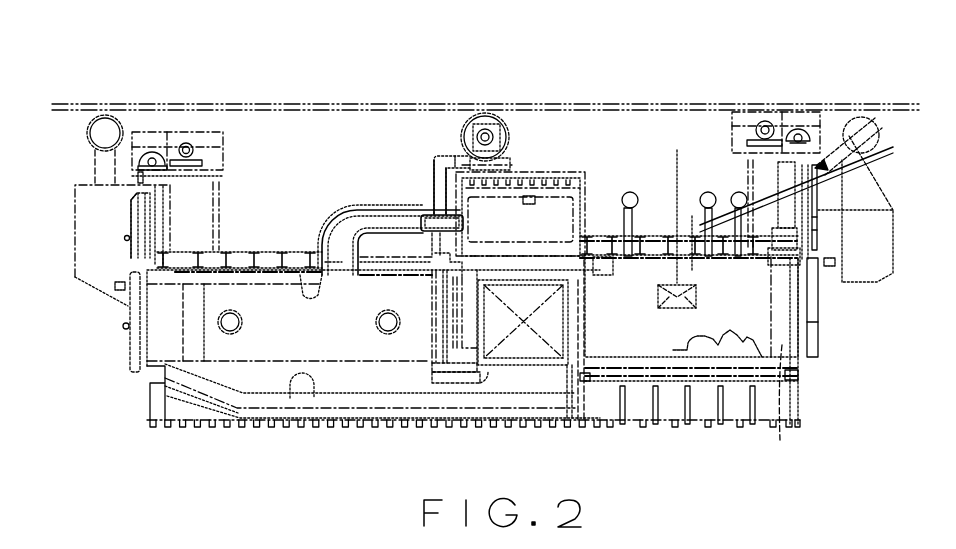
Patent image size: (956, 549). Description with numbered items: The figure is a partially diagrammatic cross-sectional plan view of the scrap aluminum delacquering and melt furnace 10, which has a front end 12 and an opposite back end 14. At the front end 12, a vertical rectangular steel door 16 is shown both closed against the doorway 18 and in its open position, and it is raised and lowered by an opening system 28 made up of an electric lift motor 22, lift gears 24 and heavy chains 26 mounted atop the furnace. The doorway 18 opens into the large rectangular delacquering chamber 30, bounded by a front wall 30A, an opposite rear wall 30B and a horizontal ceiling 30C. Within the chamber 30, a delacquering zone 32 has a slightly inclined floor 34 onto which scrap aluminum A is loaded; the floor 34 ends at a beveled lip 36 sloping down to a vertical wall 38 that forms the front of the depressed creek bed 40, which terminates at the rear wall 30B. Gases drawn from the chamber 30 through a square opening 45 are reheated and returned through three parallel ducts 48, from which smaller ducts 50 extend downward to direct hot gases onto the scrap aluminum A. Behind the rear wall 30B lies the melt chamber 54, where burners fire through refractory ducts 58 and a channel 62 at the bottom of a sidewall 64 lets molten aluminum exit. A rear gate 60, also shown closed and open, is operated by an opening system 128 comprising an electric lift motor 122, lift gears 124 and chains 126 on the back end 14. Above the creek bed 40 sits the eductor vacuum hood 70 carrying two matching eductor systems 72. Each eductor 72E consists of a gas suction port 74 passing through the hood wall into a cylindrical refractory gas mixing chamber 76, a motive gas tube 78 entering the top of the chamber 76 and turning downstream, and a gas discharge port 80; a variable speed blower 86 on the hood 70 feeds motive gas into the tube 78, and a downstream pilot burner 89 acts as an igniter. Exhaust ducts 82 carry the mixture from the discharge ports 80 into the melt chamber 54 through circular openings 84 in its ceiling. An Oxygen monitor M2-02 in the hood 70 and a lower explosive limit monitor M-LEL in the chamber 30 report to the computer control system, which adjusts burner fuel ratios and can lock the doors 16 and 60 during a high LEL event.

The scrap aluminum delacquering and melt furnace 10 is at (540, 58).
The front end 12 is at (715, 68).
The back end 14 is at (209, 82).
The door 16 is at (860, 213).
The doorway 18 is at (803, 363).
The electric lift motor 22 is at (767, 120).
The lift gears 24 is at (800, 130).
The chains 26 is at (862, 118).
The opening system 28 is at (809, 78).
The delacquering chamber 30 is at (642, 285).
The front wall 30A is at (787, 401).
The rear wall 30B is at (486, 384).
The ceiling 30C is at (690, 215).
The delacquering zone 32 is at (647, 303).
The floor 34 is at (660, 357).
The beveled lip 36 is at (580, 420).
The vertical wall 38 is at (565, 380).
The creek bed 40 is at (521, 380).
The square opening 45 is at (677, 216).
The cylindrical steel ducts 48 is at (626, 195).
The cylindrical steel ducts 50 is at (870, 150).
The melt chamber 54 is at (288, 348).
The refractory ducts 58 is at (228, 310).
The rear gate 60 is at (128, 227).
The channel 62 is at (303, 398).
The sidewall 64 is at (349, 333).
The eductor vacuum hood 70 is at (540, 200).
The eductor system 72 is at (328, 210).
The eductor 72E is at (412, 166).
The gas suction port 74 is at (463, 222).
The gas mixing chamber 76 is at (427, 216).
The motive gas tube 78 is at (436, 180).
The gas discharge port 80 is at (418, 222).
The exhaust ducts 82 is at (364, 210).
The circular openings 84 is at (320, 270).
The variable speed blower 86 is at (498, 118).
The downstream pilot burner 89 is at (324, 210).
The electric lift motor 122 is at (190, 145).
The lift gears 124 is at (150, 150).
The chains 126 is at (137, 175).
The opening system 128 is at (157, 125).
The scrap aluminum A is at (731, 332).
The Oxygen monitor M2-02 is at (530, 196).
The lower explosive limit monitor M-LEL is at (612, 275).